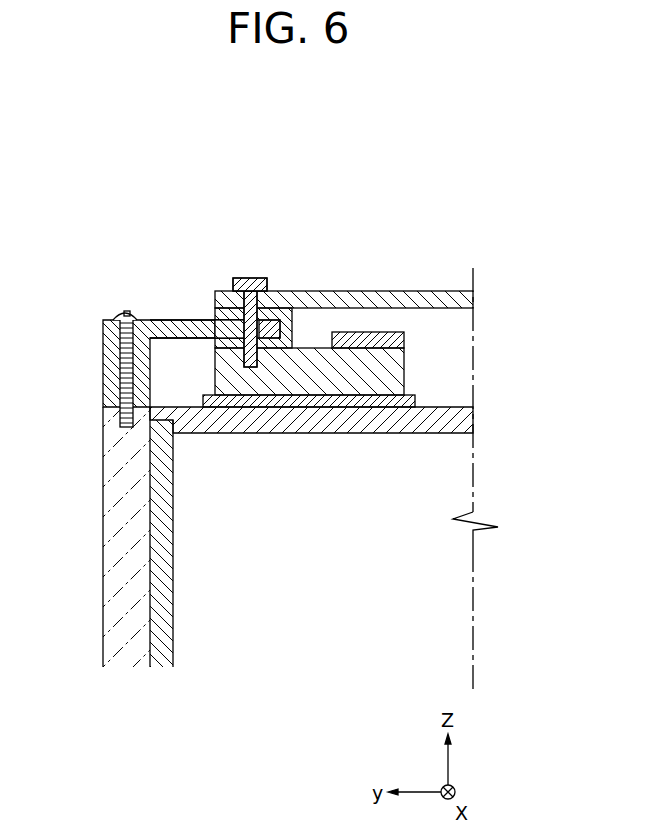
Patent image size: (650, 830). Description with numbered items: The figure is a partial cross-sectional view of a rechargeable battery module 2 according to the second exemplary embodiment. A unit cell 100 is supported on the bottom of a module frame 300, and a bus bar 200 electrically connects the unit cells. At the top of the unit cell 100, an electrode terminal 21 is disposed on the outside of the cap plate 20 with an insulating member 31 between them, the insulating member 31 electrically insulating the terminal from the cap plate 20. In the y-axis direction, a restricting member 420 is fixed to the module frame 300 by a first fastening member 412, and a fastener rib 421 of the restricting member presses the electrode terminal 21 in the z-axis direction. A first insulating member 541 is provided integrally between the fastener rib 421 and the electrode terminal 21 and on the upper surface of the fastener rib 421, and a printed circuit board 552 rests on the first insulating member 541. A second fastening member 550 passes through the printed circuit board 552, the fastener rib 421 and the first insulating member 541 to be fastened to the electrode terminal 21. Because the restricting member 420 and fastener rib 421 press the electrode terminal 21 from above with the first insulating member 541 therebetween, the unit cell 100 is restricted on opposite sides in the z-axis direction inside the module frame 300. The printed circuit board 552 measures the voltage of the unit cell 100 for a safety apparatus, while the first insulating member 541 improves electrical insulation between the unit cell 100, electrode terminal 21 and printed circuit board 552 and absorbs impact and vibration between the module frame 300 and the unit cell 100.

The rechargeable battery module 2 is at (455, 250).
The cap plate 20 is at (457, 420).
The electrode terminal 21 is at (387, 357).
The insulating member 31 is at (422, 403).
The unit cell 100 is at (453, 495).
The bus bar 200 is at (387, 340).
The module frame 300 is at (103, 502).
The first fastening member 412 is at (118, 310).
The restricting member 420 is at (103, 345).
The fastener rib 421 is at (187, 320).
The first insulating member 541 is at (293, 318).
The second fastening member 550 is at (242, 278).
The printed circuit board 552 is at (350, 291).